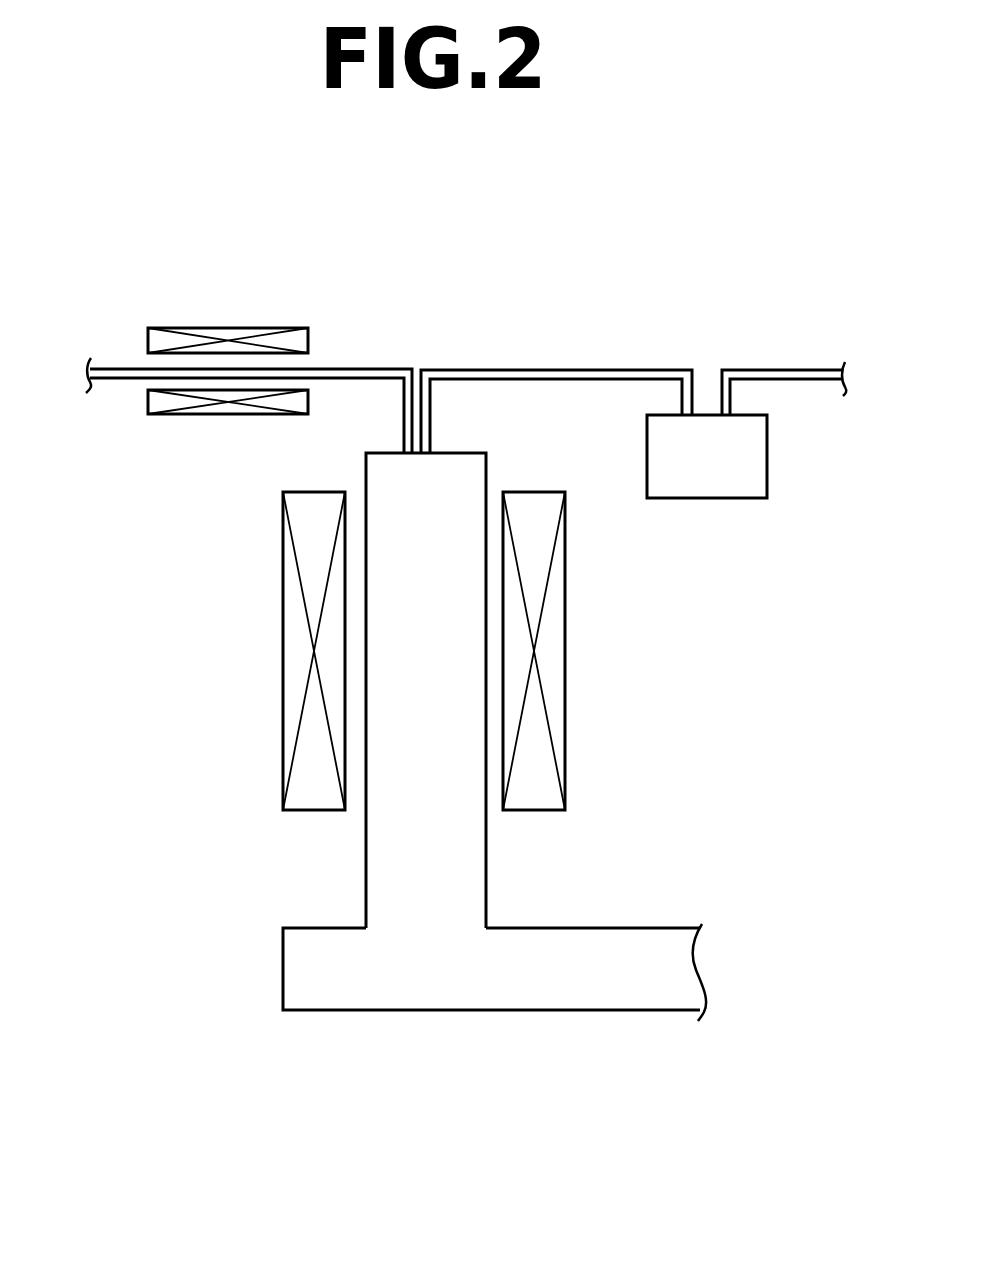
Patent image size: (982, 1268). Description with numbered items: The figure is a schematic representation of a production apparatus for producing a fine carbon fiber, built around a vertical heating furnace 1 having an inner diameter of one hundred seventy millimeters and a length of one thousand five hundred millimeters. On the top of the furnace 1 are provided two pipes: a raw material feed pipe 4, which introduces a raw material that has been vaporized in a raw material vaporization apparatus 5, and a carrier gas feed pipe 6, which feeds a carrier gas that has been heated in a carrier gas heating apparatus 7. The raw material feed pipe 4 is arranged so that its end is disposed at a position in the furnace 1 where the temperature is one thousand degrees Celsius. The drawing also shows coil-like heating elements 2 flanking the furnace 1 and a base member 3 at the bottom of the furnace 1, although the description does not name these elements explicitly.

The vertical heating furnace 1 is at (362, 473).
The heating coil 2 is at (283, 620).
The base / chamber 3 is at (517, 1010).
The raw material feed pipe 4 is at (760, 370).
The raw material vaporization apparatus 5 is at (745, 498).
The carrier gas feed pipe 6 is at (123, 364).
The carrier gas heating apparatus 7 is at (230, 327).